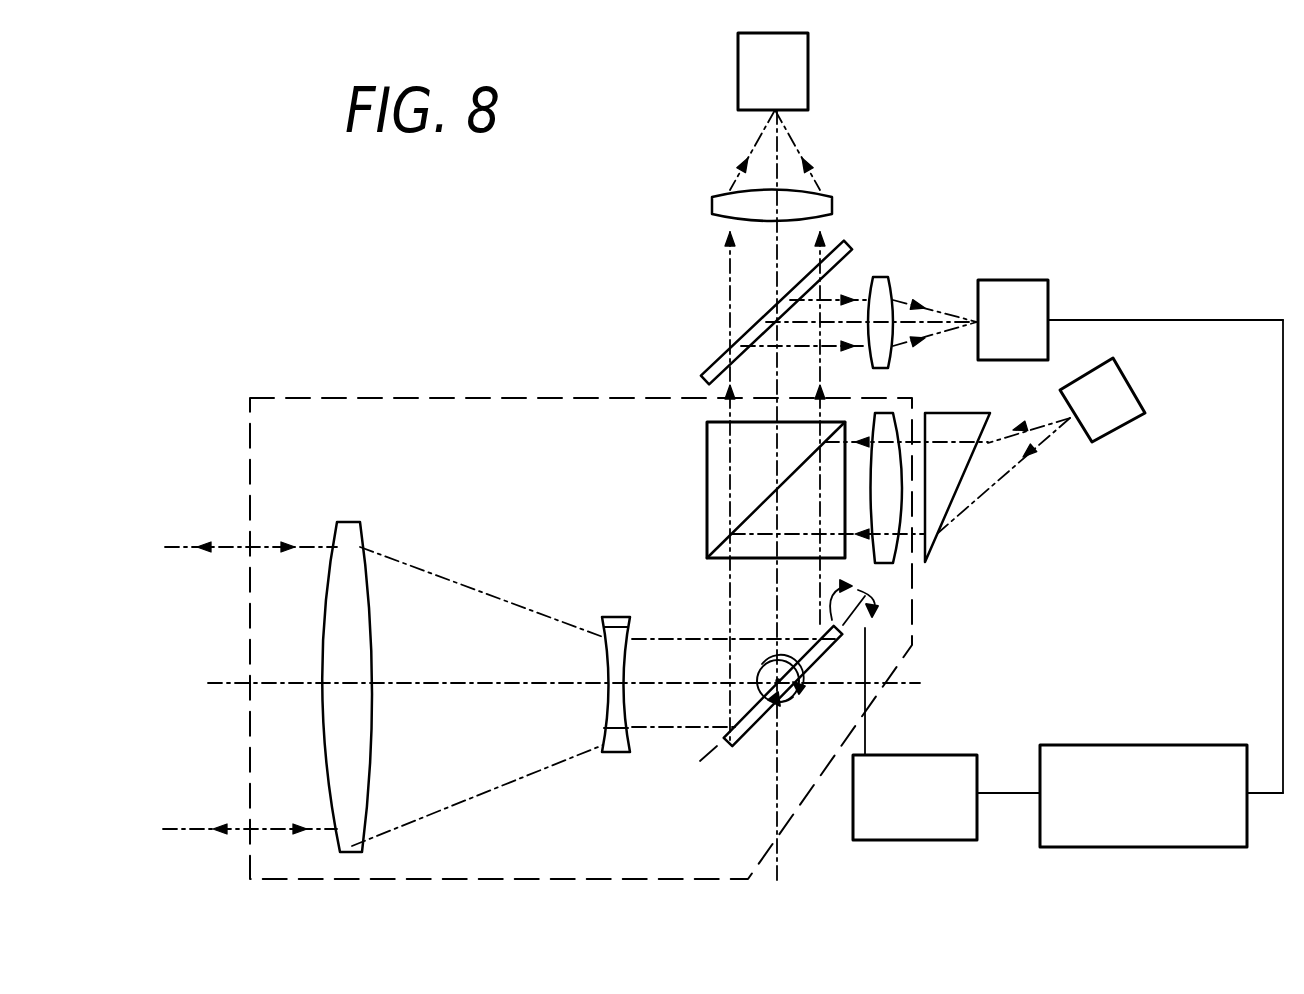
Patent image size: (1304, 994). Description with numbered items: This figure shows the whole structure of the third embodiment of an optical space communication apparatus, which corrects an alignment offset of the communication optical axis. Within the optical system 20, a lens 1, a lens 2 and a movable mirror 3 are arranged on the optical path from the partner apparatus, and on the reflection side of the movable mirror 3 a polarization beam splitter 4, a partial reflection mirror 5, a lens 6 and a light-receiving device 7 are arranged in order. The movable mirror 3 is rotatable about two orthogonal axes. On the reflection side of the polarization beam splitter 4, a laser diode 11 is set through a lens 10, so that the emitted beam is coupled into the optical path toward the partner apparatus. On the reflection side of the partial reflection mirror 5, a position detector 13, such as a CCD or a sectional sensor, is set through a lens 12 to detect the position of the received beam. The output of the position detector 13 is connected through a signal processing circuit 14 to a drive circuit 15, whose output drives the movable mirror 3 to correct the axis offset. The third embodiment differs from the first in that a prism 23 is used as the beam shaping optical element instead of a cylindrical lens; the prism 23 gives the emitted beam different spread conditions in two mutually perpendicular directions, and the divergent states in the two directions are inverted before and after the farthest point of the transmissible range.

The lens 1 is at (348, 522).
The lens 2 is at (613, 617).
The movable mirror 3 is at (753, 757).
The polarization beam splitter 4 is at (712, 472).
The partial reflection mirror 5 is at (715, 372).
The lens 6 is at (712, 207).
The light-receiving device 7 is at (738, 95).
The lens 10 is at (905, 545).
The laser diode 11 is at (1128, 382).
The lens 12 is at (880, 276).
The position detector 13 is at (1035, 280).
The signal processing circuit 14 is at (1217, 745).
The drive circuit 15 is at (955, 755).
The optical system 20 is at (493, 398).
The prism 23 is at (940, 413).